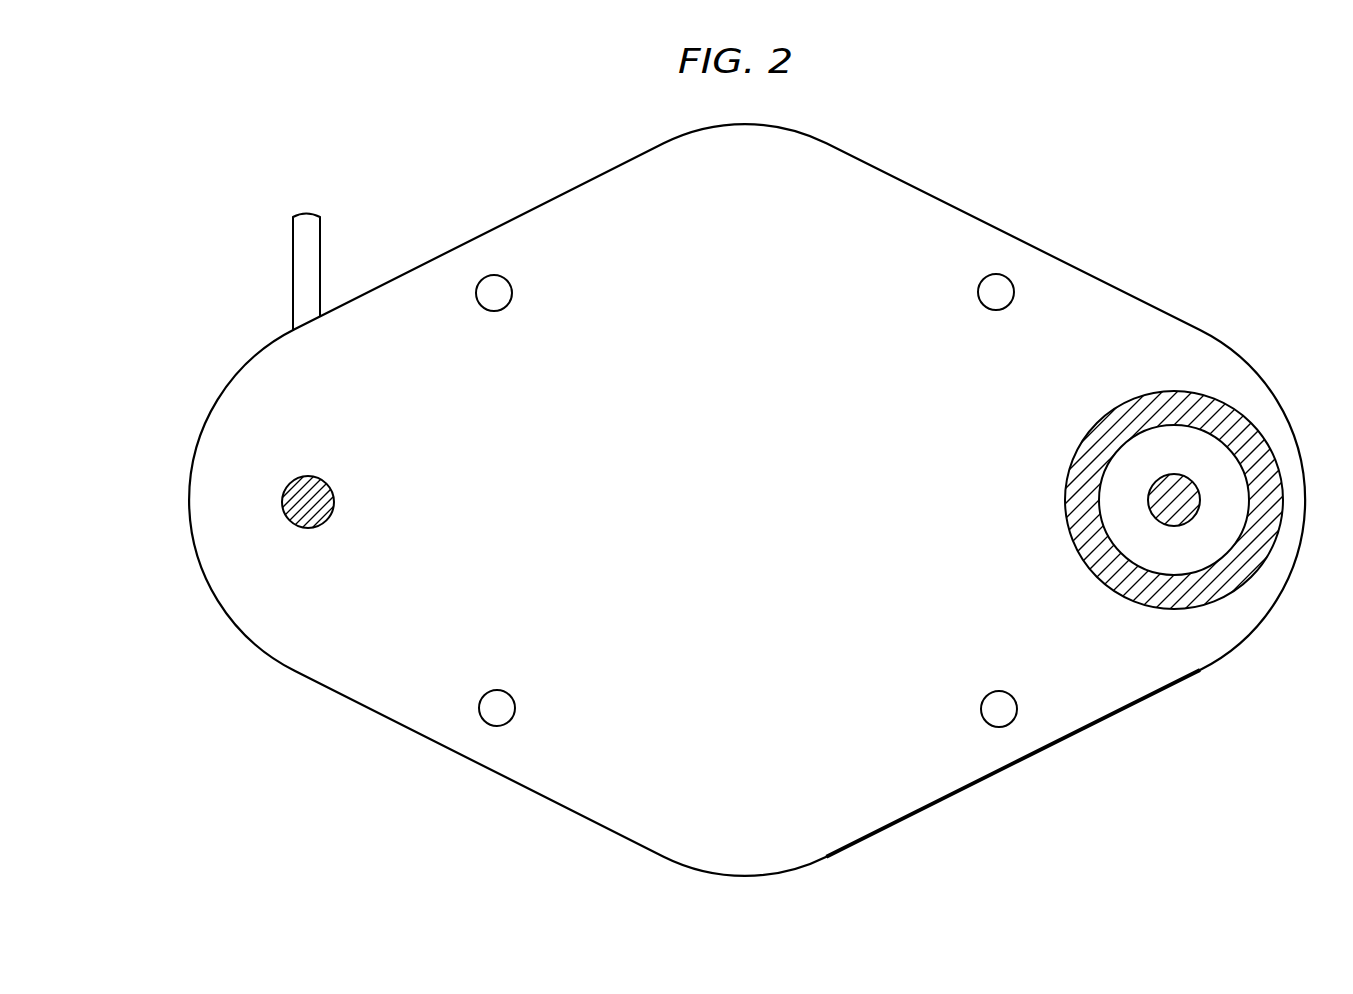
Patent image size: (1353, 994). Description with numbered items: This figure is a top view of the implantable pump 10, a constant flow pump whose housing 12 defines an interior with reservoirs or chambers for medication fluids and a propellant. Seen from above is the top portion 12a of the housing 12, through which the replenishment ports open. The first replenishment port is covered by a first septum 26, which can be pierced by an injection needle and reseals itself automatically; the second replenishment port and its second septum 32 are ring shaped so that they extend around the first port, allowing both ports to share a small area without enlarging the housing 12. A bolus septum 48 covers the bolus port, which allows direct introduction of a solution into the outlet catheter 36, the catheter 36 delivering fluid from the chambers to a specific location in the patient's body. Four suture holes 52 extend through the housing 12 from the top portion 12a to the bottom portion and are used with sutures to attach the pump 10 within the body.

The implantable pump 10 is at (1118, 181).
The housing 12 is at (1116, 713).
The top portion 12a is at (928, 773).
The first septum 26 is at (1170, 492).
The second septum 32 is at (1267, 468).
The outlet catheter 36 is at (302, 262).
The bolus septum 48 is at (296, 500).
The suture holes 52 is at (492, 288).